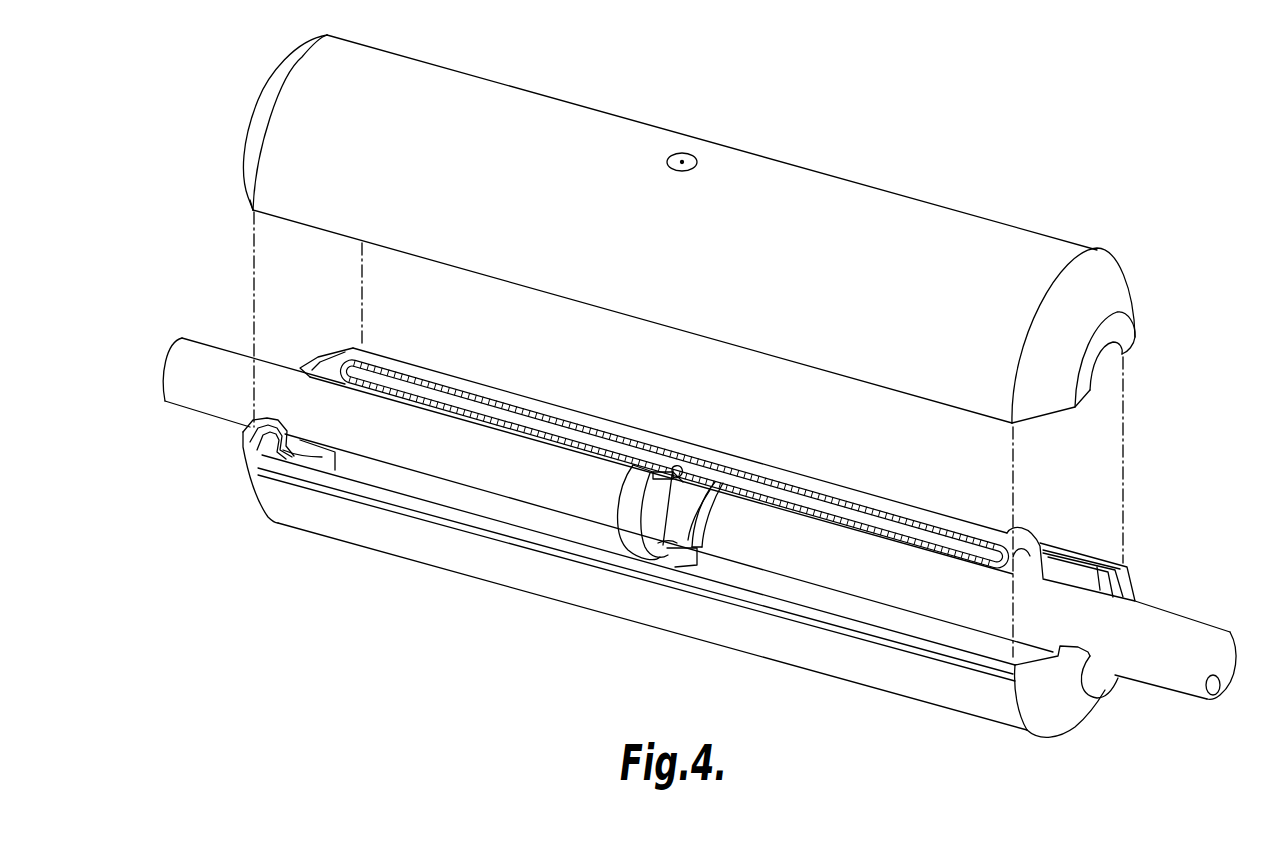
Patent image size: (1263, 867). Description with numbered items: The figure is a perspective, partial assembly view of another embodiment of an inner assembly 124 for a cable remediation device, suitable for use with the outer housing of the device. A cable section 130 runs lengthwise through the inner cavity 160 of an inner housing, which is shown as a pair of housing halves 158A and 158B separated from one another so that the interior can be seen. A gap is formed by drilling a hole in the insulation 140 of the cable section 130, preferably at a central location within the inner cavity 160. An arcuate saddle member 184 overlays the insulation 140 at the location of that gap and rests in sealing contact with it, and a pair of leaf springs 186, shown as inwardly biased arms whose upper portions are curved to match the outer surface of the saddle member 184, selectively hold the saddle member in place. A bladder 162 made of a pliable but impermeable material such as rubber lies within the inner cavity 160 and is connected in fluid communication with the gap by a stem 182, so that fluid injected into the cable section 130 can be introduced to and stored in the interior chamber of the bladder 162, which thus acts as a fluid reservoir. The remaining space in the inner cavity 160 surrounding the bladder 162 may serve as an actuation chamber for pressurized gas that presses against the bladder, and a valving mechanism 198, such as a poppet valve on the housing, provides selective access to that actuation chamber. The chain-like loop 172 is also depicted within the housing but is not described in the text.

The inner assembly 124 is at (1076, 195).
The cable section 130 is at (192, 331).
The insulation 140 is at (1190, 628).
The inner housing half 158A is at (250, 123).
The inner housing half 158B is at (383, 553).
The inner cavity 160 is at (322, 457).
The bladder 162 is at (383, 355).
The optical fiber loop 172 is at (448, 395).
The stem 182 is at (681, 467).
The arcuate saddle member 184 is at (687, 537).
The leaf springs 186 is at (652, 535).
The valving mechanism 198 is at (688, 156).